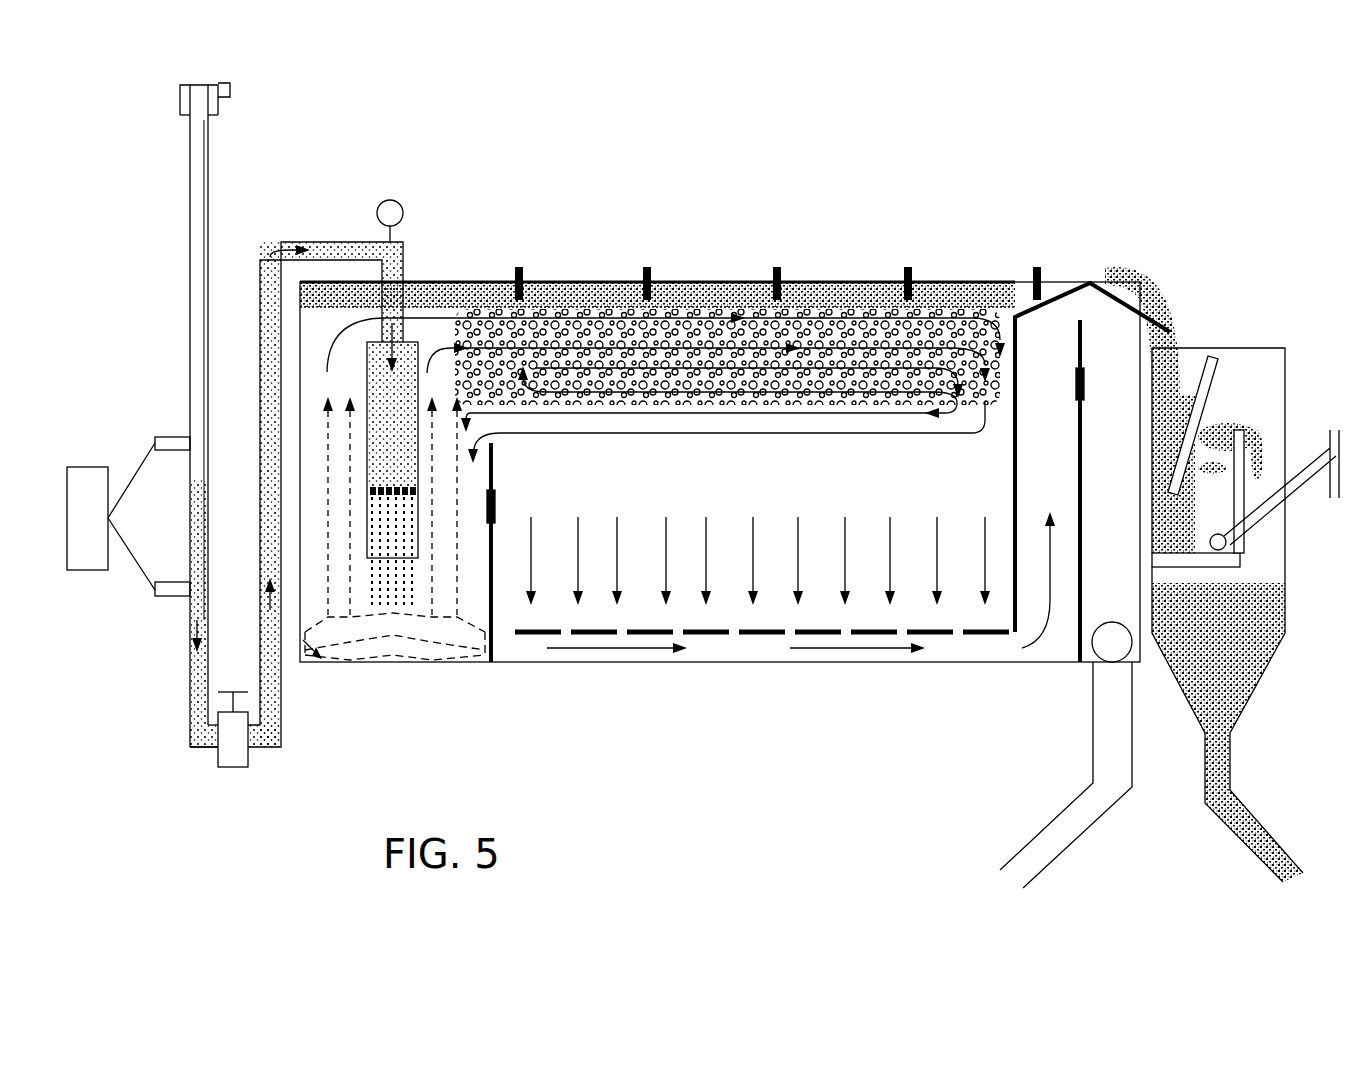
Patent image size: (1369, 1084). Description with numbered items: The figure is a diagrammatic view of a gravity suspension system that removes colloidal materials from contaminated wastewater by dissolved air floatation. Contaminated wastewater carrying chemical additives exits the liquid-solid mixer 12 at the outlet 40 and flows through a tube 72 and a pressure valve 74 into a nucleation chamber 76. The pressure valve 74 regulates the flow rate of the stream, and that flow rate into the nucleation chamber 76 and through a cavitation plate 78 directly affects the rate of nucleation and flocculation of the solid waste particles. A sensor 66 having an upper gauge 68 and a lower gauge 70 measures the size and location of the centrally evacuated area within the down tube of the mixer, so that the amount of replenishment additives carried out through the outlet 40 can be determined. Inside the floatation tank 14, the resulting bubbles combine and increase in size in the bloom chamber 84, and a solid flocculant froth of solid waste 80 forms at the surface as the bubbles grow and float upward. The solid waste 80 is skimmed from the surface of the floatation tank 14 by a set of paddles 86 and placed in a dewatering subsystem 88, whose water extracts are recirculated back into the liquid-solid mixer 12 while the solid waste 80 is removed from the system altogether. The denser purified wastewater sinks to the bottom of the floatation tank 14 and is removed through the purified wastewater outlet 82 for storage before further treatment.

The liquid-solid mixer 12 is at (192, 230).
The floatation tank 14 is at (660, 705).
The outlet 40 is at (197, 698).
The sensor 66 is at (92, 467).
The upper gauge 68 is at (175, 437).
The lower gauge 70 is at (175, 597).
The tube 72 is at (202, 750).
The pressure valve 74 is at (247, 767).
The nucleation chamber 76 is at (400, 388).
The cavitation plate 78 is at (402, 490).
The solid waste 80 is at (842, 295).
The purified wastewater outlet 82 is at (1108, 648).
The bloom chamber 84 is at (338, 573).
The paddles 86 is at (912, 267).
The dewatering subsystem 88 is at (1248, 312).